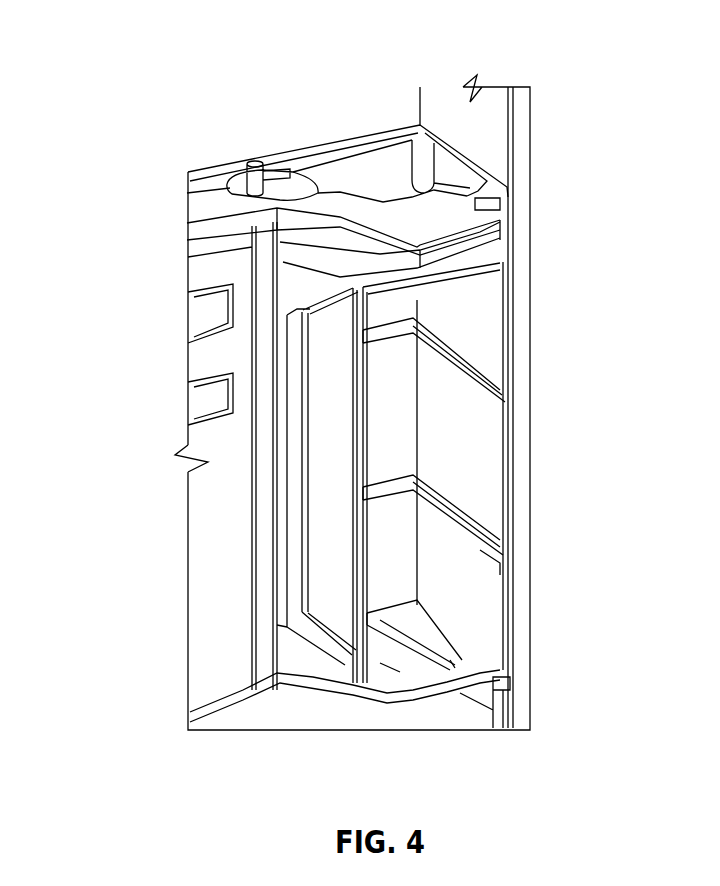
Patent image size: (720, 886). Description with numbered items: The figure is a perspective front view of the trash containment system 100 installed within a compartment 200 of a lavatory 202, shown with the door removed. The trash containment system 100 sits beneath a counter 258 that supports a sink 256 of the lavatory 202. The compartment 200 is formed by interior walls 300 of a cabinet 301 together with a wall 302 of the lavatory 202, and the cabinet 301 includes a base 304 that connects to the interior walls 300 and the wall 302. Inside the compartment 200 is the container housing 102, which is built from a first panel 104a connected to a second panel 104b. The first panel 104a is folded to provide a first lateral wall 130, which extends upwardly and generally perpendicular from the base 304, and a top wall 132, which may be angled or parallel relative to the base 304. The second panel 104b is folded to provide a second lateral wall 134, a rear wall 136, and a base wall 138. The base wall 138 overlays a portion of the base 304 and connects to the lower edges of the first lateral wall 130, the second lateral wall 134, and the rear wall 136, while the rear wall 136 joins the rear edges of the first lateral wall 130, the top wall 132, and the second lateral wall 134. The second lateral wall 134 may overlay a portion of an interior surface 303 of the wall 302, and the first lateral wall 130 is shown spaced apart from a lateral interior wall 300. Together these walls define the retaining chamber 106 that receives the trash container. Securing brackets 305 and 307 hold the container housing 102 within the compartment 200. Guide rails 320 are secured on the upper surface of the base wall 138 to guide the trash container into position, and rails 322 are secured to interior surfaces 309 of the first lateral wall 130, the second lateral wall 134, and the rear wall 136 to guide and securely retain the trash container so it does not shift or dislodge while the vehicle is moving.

The trash containment system 100 is at (490, 331).
The container housing 102 is at (302, 530).
The first panel 104a is at (332, 548).
The second panel 104b is at (477, 582).
The retaining chamber 106 is at (460, 470).
The first lateral wall 130 is at (330, 477).
The top wall 132 is at (255, 283).
The second lateral wall 134 is at (490, 423).
The rear wall 136 is at (388, 378).
The base wall 138 is at (468, 660).
The compartment 200 is at (503, 222).
The lavatory 202 is at (258, 140).
The sink 256 is at (428, 162).
The counter 258 is at (386, 132).
The interior walls 300 is at (338, 260).
The cabinet 301 is at (265, 352).
The wall 302 is at (513, 447).
The interior surface 303 is at (498, 527).
The base 304 is at (308, 678).
The securing bracket 305 is at (293, 425).
The securing bracket 307 is at (495, 244).
The interior surfaces 309 is at (500, 300).
The guide rails 320 is at (380, 668).
The rails 322 is at (390, 330).